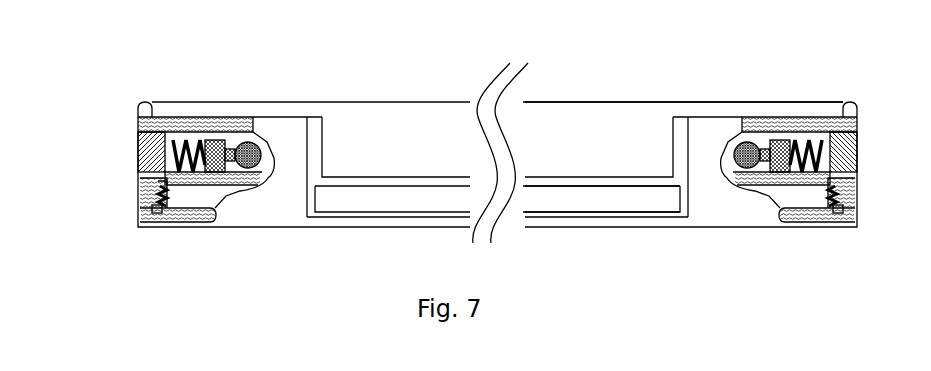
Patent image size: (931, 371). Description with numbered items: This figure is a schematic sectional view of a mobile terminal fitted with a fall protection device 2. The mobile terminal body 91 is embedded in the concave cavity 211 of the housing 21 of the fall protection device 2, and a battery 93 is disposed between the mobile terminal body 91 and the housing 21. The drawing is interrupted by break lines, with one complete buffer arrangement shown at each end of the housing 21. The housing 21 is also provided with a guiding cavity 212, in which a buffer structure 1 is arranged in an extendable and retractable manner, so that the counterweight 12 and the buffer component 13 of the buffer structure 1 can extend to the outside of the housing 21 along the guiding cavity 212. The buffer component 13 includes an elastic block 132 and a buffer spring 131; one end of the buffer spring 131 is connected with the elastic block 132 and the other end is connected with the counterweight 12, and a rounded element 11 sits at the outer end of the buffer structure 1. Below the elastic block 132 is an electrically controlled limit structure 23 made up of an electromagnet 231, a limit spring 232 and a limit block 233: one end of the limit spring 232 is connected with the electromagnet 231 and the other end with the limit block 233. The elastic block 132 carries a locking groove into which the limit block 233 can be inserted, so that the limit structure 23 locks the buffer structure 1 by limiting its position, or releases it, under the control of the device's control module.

The buffer structure 1 is at (322, 53).
The roller 11 is at (268, 152).
The counterweight 12 is at (212, 147).
The buffer component 13 is at (232, 81).
The buffer spring 131 is at (192, 148).
The elastic block 132 is at (150, 152).
The fall protection device 2 is at (137, 157).
The housing 21 is at (173, 224).
The concave cavity 211 is at (313, 174).
The guiding cavity 212 is at (237, 178).
The electrically controlled limit structure 23 is at (68, 202).
The electromagnet 231 is at (158, 216).
The limit spring 232 is at (157, 202).
The limit block 233 is at (162, 181).
The mobile terminal body 91 is at (398, 135).
The battery 93 is at (587, 198).